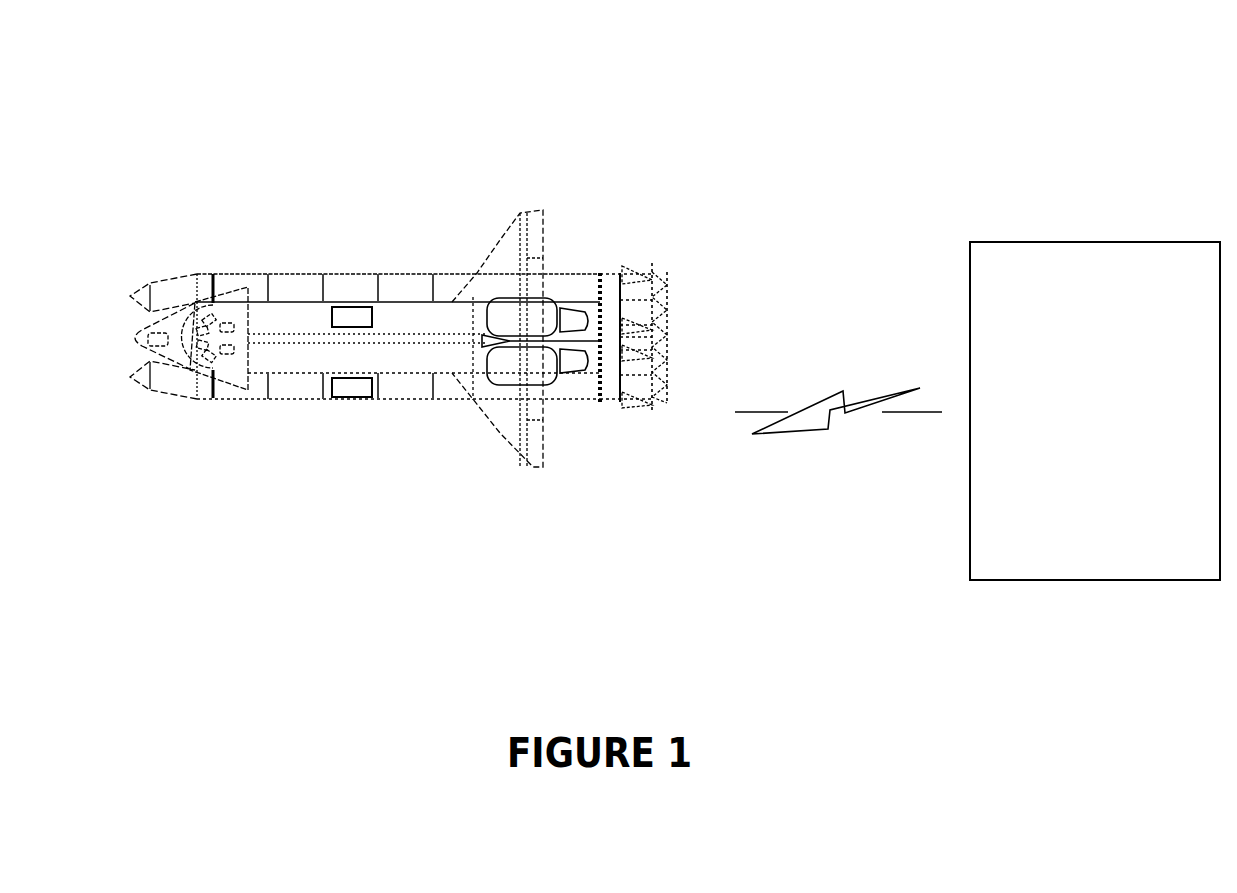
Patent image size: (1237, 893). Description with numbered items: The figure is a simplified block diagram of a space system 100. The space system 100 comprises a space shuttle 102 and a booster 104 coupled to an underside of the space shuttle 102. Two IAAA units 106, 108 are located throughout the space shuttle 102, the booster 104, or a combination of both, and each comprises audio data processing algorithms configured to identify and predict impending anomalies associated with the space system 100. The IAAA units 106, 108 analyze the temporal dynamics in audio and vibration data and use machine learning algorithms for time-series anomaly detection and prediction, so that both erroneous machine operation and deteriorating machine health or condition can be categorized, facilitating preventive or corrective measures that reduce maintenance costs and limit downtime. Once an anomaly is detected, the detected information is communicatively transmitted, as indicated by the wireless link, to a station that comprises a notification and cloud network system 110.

The space system 100 is at (728, 150).
The space shuttle 102 is at (388, 318).
The booster 104 is at (285, 281).
The IAAA 106 is at (343, 318).
The IAAA 108 is at (363, 398).
The notification and cloud network system 110 is at (1078, 445).